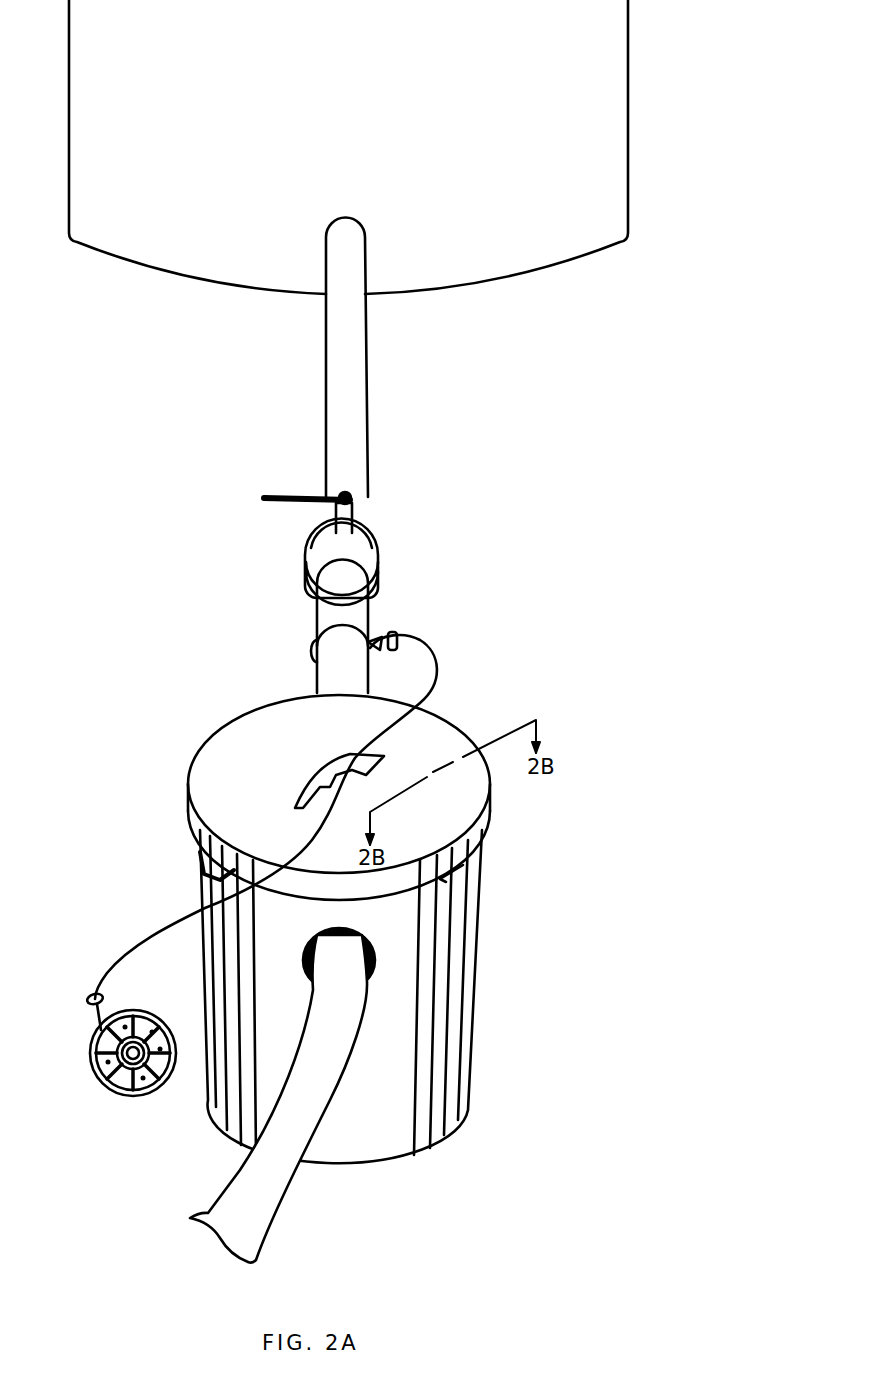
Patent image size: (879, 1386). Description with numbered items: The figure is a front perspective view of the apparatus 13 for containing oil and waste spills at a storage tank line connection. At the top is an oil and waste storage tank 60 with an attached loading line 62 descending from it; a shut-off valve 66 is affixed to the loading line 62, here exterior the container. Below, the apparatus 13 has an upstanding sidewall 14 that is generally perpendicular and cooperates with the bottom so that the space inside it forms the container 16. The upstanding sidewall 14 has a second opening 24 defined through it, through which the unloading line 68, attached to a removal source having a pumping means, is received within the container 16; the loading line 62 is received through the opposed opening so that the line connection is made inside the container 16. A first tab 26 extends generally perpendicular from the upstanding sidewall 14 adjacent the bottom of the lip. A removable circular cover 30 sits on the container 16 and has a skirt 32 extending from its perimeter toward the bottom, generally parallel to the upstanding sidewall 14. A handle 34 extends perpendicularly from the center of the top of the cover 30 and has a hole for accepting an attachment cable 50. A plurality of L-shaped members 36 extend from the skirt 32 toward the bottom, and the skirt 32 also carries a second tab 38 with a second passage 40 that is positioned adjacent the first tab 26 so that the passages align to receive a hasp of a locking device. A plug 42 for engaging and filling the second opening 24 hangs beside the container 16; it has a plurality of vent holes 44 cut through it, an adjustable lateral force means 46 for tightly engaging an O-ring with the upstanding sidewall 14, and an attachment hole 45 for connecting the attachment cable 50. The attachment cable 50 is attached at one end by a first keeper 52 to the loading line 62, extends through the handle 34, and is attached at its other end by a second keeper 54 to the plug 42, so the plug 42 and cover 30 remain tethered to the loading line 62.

The apparatus 13 is at (547, 673).
The upstanding sidewall 14 is at (477, 1000).
The container 16 is at (392, 1081).
The second opening 24 is at (355, 935).
The first tab 26 is at (197, 887).
The removable circular cover 30 is at (277, 775).
The skirt 32 is at (490, 810).
The handle 34 is at (372, 753).
The L-shaped members 36 is at (455, 878).
The second tab 38 is at (200, 862).
The second passage 40 is at (212, 860).
The plug 42 is at (114, 1057).
The vent holes 44 is at (122, 1030).
The attachment hole 45 is at (95, 1037).
The adjustable lateral force means 46 is at (150, 1033).
The attachment cable 50 is at (436, 657).
The first keeper 52 is at (400, 633).
The second keeper 54 is at (82, 997).
The oil and waste storage tank 60 is at (507, 196).
The loading line 62 is at (370, 383).
The shut-off valve 66 is at (385, 541).
The unloading line 68 is at (295, 1172).